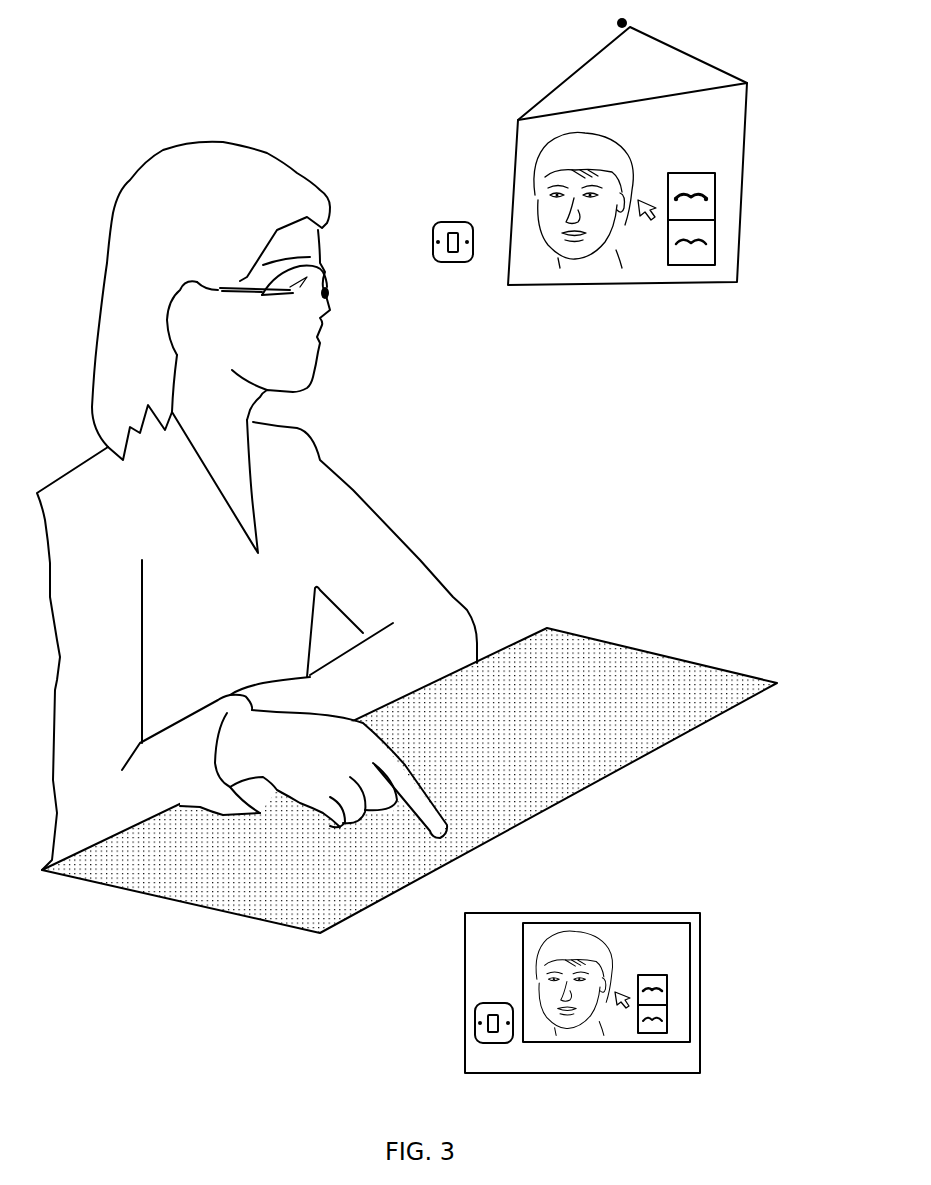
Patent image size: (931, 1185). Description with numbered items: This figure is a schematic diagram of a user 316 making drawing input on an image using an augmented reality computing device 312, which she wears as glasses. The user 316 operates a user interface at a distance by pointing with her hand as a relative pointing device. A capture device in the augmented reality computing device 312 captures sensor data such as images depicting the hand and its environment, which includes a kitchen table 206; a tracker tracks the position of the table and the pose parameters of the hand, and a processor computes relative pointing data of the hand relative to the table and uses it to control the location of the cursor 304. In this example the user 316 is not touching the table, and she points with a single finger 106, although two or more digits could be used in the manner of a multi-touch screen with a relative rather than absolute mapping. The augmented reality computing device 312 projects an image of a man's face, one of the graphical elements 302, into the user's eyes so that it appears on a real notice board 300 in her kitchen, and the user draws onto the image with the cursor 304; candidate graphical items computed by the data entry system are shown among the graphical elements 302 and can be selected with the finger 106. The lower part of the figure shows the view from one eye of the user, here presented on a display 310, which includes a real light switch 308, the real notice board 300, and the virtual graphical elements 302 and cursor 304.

The finger of user 106 is at (403, 772).
The touch-sensitive surface 206 is at (655, 652).
The notice board 300 is at (732, 180).
The graphical elements 302 is at (553, 150).
The cursor 304 is at (608, 285).
The light switch 308 is at (447, 232).
The mobile device 310 is at (700, 1053).
The augmented reality computing device 312 is at (327, 276).
The user 316 is at (80, 460).